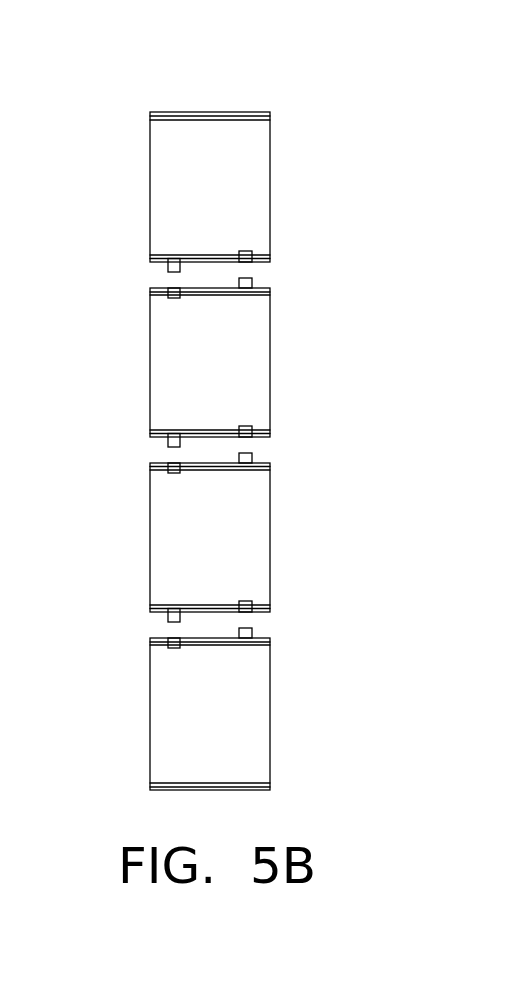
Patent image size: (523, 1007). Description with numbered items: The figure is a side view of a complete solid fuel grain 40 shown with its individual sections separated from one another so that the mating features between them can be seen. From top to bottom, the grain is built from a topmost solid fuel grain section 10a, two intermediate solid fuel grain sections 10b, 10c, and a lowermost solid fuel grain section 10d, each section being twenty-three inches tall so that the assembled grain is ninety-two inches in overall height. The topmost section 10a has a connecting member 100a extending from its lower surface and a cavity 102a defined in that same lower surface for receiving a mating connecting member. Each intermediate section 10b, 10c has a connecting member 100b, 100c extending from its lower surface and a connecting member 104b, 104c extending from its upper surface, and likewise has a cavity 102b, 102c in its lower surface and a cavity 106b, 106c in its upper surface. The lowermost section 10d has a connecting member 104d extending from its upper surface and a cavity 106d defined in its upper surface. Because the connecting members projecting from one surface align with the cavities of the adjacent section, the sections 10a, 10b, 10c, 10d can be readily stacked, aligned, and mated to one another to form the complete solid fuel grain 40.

The complete solid fuel grain 40 is at (76, 96).
The topmost solid fuel grain section 10a is at (260, 155).
The intermediate solid fuel grain section 10b is at (260, 365).
The intermediate solid fuel grain section 10c is at (262, 540).
The lowermost solid fuel grain section 10d is at (265, 728).
The connecting member 100a is at (170, 267).
The connecting member 100b is at (170, 445).
The connecting member 100c is at (170, 620).
The cavity 102a is at (245, 251).
The cavity 102b is at (248, 426).
The cavity 102c is at (248, 601).
The connecting member 104b is at (246, 283).
The connecting member 104c is at (252, 458).
The connecting member 104d is at (252, 633).
The cavity 106b is at (175, 300).
The cavity 106c is at (175, 475).
The cavity 106d is at (175, 650).